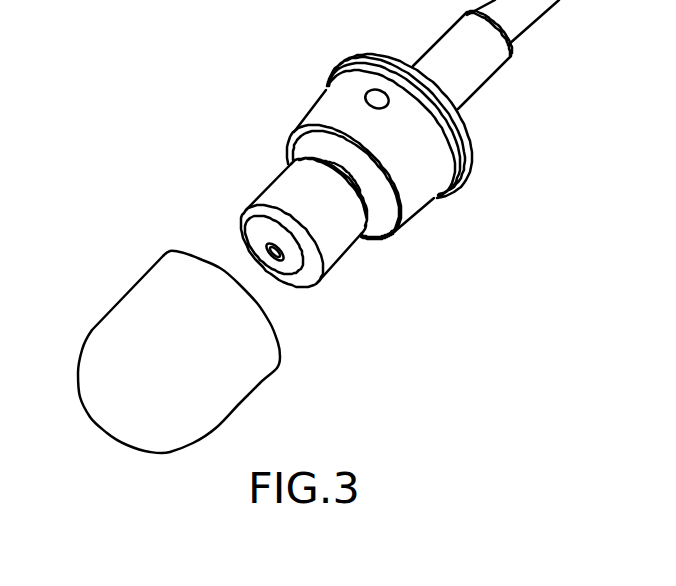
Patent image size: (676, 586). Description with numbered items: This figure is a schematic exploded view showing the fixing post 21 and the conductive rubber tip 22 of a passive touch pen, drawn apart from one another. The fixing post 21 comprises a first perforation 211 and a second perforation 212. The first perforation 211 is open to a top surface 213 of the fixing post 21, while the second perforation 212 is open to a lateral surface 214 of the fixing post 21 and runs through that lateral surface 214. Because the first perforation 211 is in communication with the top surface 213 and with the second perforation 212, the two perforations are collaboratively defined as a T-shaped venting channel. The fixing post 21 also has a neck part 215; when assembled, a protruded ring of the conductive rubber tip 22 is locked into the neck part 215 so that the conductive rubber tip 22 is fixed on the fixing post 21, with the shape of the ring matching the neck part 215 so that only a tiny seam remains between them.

The fixing post 21 is at (380, 159).
The conductive rubber tip 22 is at (127, 277).
The first perforation 211 is at (282, 261).
The second perforation 212 is at (380, 96).
The top surface 213 is at (251, 238).
The lateral surface 214 is at (420, 193).
The neck part 215 is at (372, 220).